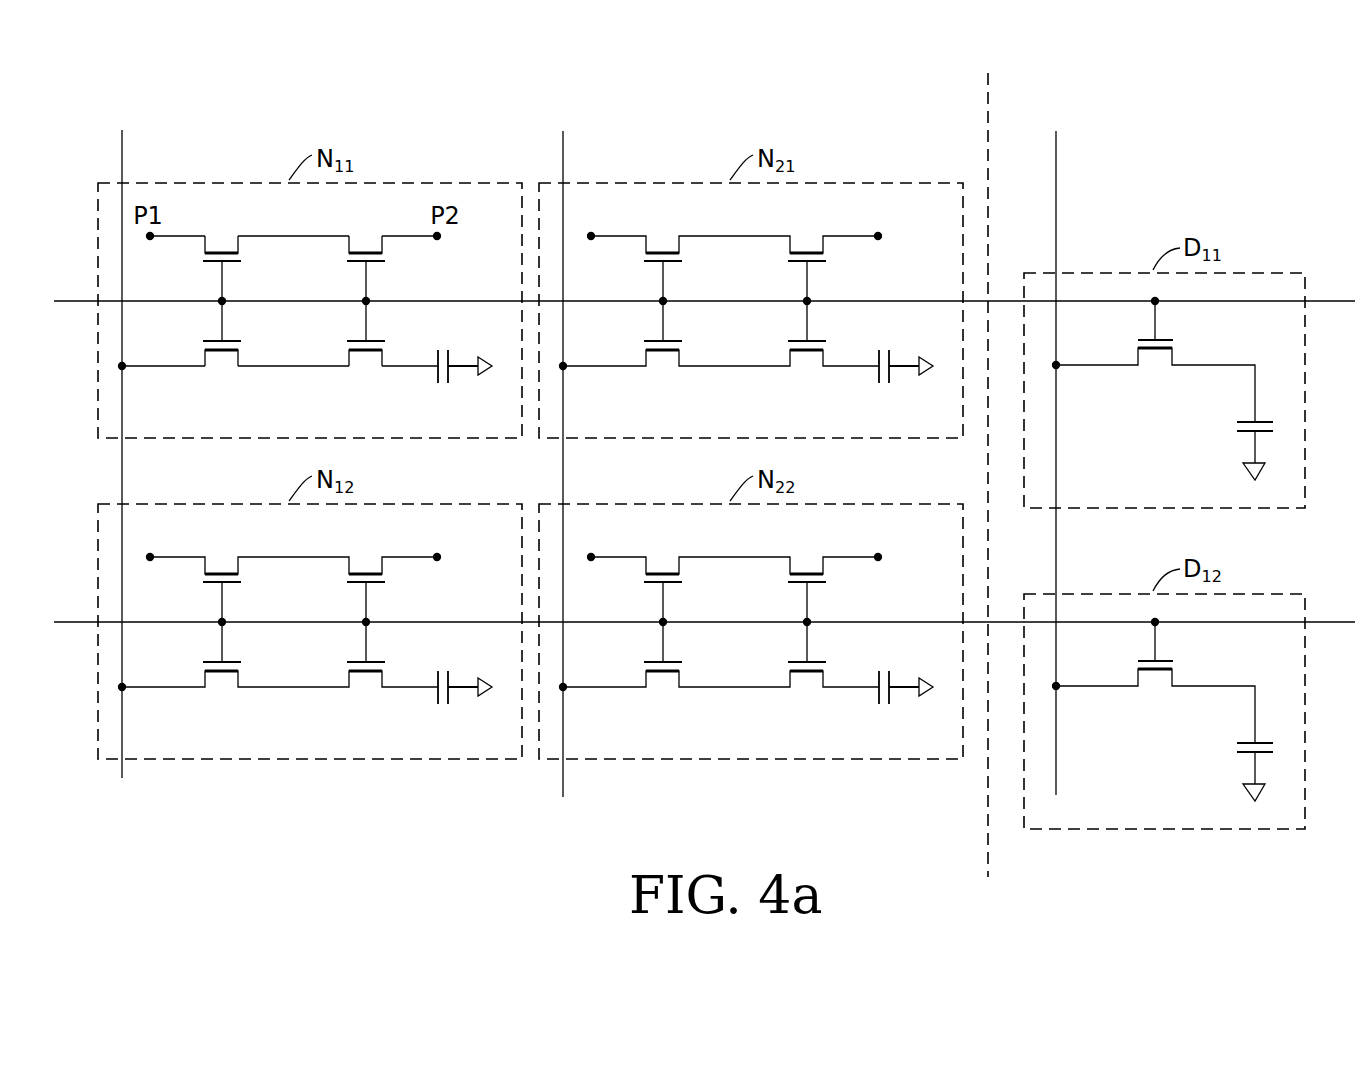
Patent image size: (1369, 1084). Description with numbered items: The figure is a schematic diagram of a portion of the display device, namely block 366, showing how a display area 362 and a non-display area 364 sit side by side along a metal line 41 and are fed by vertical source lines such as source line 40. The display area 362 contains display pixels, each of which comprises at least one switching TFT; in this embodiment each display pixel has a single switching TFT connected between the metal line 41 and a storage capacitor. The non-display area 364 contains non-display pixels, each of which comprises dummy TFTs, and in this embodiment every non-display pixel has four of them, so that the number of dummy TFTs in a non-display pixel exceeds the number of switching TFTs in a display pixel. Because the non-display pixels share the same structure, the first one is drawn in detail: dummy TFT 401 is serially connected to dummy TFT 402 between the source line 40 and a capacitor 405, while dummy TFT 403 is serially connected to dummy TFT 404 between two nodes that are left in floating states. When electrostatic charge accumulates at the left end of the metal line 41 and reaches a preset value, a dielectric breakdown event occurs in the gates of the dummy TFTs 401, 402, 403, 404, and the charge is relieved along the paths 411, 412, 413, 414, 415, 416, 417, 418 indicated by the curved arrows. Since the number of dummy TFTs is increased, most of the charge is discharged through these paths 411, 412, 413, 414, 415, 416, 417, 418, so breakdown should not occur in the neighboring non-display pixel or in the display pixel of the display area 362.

The source line 40 is at (123, 167).
The metal line 41 is at (73, 298).
The display area 362 is at (988, 96).
The non-display area 364 is at (988, 117).
The block 366 is at (1311, 149).
The dummy TFT 401 is at (222, 366).
The dummy TFT 402 is at (365, 366).
The dummy TFT 403 is at (222, 236).
The dummy TFT 404 is at (364, 236).
The capacitor 405 is at (442, 387).
The path 411 is at (212, 313).
The path 412 is at (233, 313).
The path 413 is at (356, 313).
The path 414 is at (377, 313).
The path 415 is at (196, 252).
The path 416 is at (259, 252).
The path 417 is at (340, 252).
The path 418 is at (403, 252).